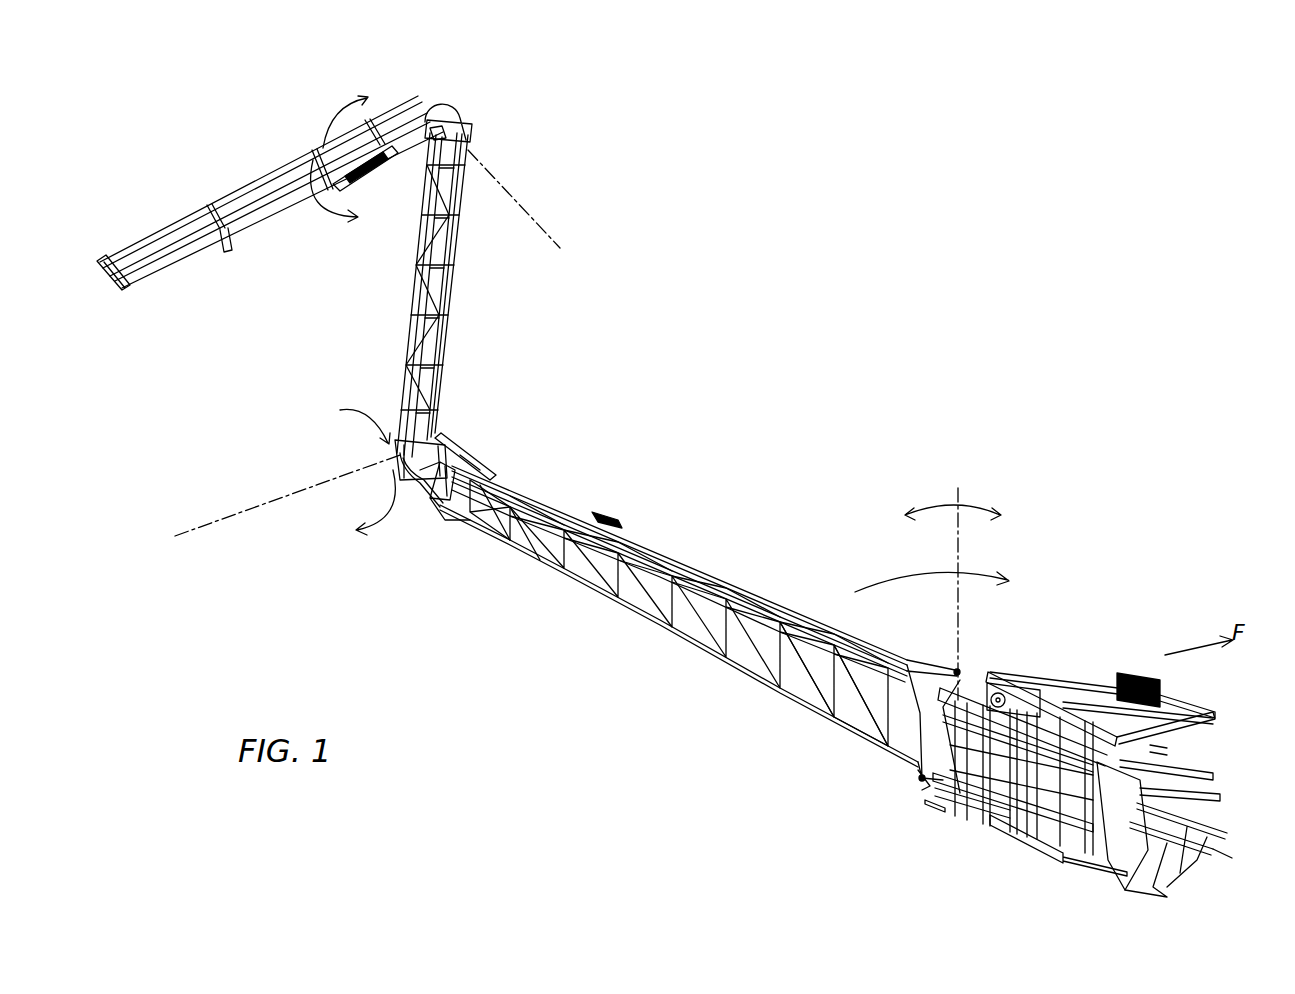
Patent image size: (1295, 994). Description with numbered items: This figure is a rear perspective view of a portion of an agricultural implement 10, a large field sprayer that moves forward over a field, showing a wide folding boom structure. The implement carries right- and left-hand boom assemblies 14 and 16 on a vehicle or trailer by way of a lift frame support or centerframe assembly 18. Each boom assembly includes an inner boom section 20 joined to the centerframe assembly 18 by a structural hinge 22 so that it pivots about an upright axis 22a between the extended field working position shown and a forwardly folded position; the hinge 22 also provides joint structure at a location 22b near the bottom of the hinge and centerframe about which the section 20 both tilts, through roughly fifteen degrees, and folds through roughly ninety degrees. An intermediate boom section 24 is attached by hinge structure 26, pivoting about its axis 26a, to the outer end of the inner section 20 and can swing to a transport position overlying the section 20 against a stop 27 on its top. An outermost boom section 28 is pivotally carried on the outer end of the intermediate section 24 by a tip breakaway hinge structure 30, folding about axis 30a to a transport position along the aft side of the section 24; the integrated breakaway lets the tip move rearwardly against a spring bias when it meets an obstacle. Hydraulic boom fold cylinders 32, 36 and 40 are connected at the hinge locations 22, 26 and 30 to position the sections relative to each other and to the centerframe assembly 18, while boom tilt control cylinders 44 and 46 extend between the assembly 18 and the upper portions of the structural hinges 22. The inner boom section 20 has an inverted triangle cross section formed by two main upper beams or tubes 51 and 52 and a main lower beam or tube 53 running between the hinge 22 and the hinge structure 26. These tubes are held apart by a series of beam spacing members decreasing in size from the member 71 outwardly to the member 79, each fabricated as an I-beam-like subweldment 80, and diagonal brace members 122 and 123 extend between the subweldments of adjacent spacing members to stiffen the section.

The agricultural implement 10 is at (679, 345).
The right-hand boom assembly 14 is at (680, 606).
The left-hand boom assembly 16 is at (1243, 853).
The centerframe assembly 18 is at (1029, 692).
The inner boom section 20 is at (680, 609).
The structural hinge 22 is at (946, 646).
The upright axis 22a is at (965, 533).
The joint location 22b is at (908, 784).
The intermediate boom section 24 is at (458, 342).
The hinge structure 26 is at (387, 440).
The hinge axis 26a is at (245, 512).
The stop 27 is at (606, 518).
The outermost boom section 28 is at (195, 185).
The tip breakaway hinge structure 30 is at (480, 121).
The breakaway hinge axis 30a is at (538, 218).
The hydraulic boom fold cylinder 32 is at (940, 802).
The hydraulic boom fold cylinder 36 is at (486, 462).
The hydraulic boom fold cylinder 40 is at (425, 130).
The boom tilt control cylinder 44 is at (985, 668).
The boom tilt control cylinder 46 is at (1060, 853).
The main upper beam 51 is at (735, 580).
The main upper beam 52 is at (667, 558).
The main lower beam 53 is at (700, 648).
The beam spacing member 71 is at (832, 700).
The beam spacing member 79 is at (456, 522).
The subweldment 80 is at (564, 595).
The diagonal brace member 122 is at (530, 505).
The diagonal brace member 123 is at (528, 560).